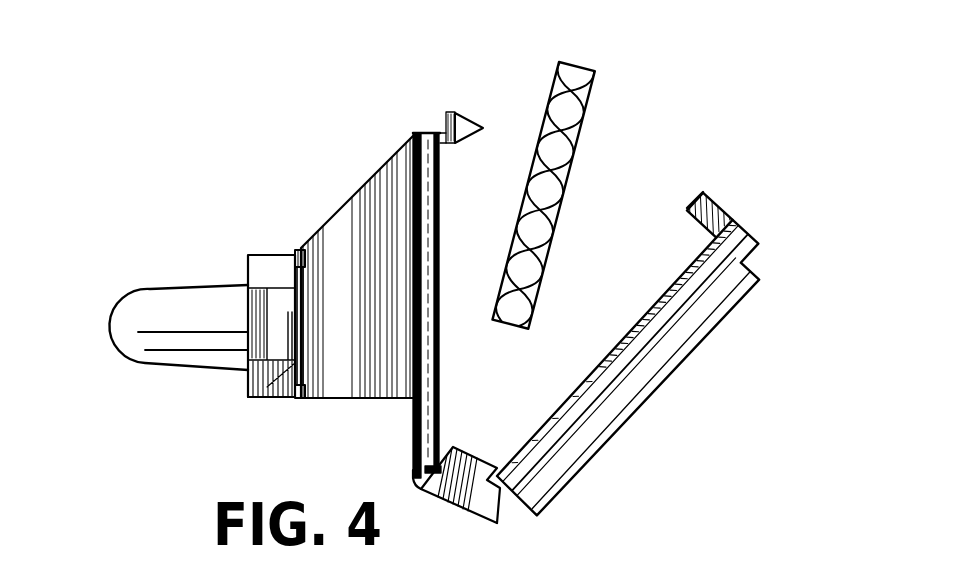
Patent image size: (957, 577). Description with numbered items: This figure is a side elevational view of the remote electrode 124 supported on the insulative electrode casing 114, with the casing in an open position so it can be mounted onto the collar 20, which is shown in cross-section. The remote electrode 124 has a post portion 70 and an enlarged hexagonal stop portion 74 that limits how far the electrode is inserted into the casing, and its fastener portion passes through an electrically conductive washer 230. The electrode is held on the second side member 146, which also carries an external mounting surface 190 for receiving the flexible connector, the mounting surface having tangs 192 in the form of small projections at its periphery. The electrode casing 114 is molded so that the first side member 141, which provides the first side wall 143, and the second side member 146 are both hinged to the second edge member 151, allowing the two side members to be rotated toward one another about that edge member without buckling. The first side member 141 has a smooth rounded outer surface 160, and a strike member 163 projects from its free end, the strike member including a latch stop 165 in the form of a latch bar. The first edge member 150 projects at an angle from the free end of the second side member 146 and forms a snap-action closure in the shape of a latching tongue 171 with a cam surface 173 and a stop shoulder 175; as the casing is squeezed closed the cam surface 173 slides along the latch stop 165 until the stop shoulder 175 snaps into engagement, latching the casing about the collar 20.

The remote electrode 124 is at (195, 318).
The post portion 70 is at (132, 343).
The electrically conductive washer 230 is at (307, 310).
The enlarged hexagonal stop portion 74 is at (263, 264).
The external mounting surface 190 is at (262, 398).
The tangs 192 is at (298, 258).
The electrode casing 114 is at (347, 207).
The second side member 146 is at (427, 273).
The stop shoulder 175 is at (443, 125).
The latching tongue 171 is at (449, 112).
The cam surface 173 is at (462, 120).
The first edge member 150 is at (457, 143).
The collar 20 is at (563, 157).
The first side member 141 is at (643, 325).
The first side wall 143 is at (548, 425).
The smooth rounded outer surface 160 is at (645, 397).
The strike member 163 is at (731, 222).
The latch stop 165 is at (709, 194).
The second edge member 151 is at (472, 470).